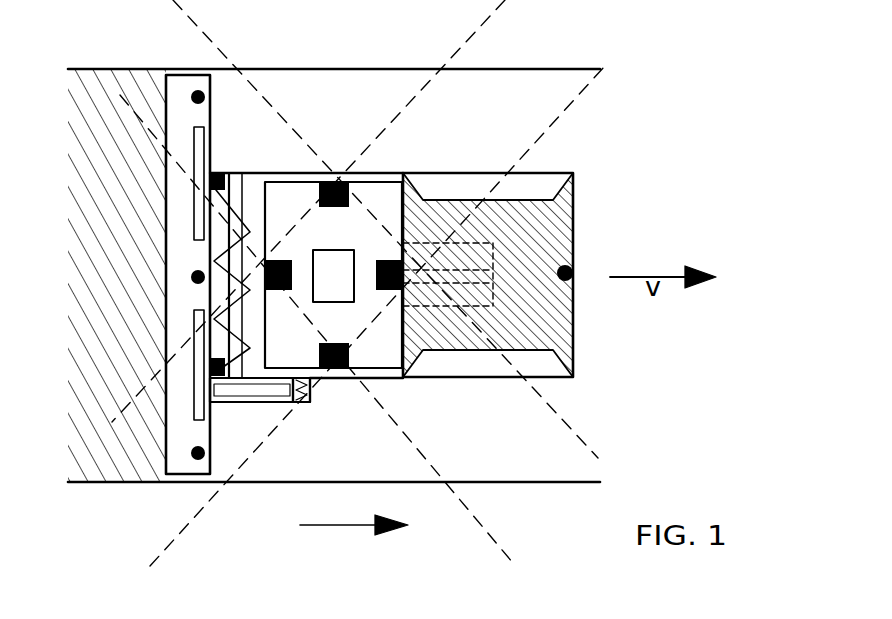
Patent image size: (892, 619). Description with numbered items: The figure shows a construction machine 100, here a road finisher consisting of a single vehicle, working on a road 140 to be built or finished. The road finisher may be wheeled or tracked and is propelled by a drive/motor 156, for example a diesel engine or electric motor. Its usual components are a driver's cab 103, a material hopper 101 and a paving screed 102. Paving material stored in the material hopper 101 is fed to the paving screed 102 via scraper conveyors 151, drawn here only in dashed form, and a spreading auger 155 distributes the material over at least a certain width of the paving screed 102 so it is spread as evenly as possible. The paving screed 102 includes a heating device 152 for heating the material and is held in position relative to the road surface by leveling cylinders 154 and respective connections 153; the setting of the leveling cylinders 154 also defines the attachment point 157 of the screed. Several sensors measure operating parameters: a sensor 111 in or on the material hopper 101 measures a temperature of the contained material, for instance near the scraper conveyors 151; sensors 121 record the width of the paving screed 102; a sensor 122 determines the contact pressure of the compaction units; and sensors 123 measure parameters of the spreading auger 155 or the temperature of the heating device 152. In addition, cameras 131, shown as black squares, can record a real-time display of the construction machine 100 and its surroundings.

The construction machine 100 is at (610, 50).
The material hopper 101 is at (565, 325).
The paving screed 102 is at (203, 433).
The driver's cab 103 is at (398, 376).
The sensor 111 is at (573, 270).
The sensors 121 is at (196, 88).
The sensor 122 is at (190, 280).
The sensors 123 is at (232, 174).
The cameras 131 is at (334, 181).
The road 140 is at (578, 470).
The scraper conveyors 151 is at (497, 257).
The heating device 152 is at (214, 172).
The connections 153 is at (273, 397).
The leveling cylinders 154 is at (307, 400).
The spreading auger 155 is at (246, 235).
The drive/motor 156 is at (354, 262).
The attachment point 157 is at (302, 387).